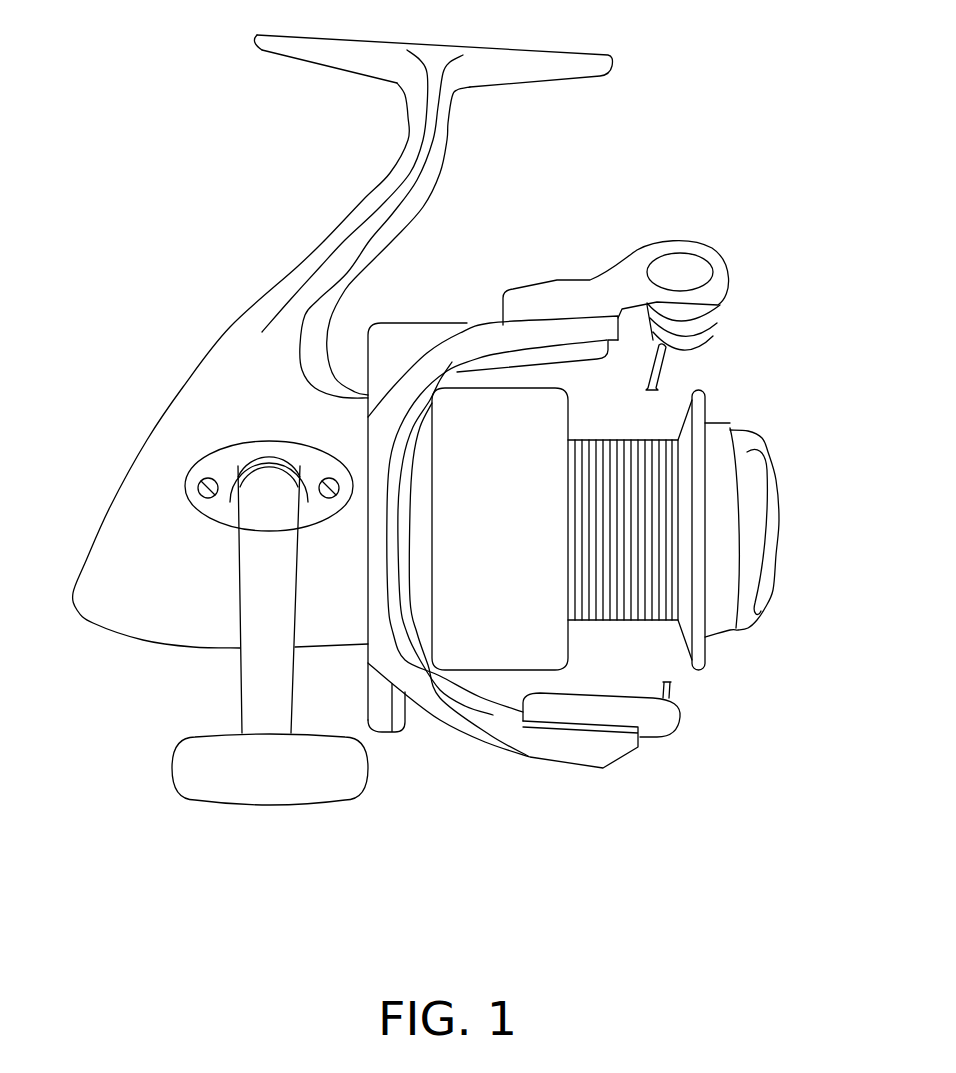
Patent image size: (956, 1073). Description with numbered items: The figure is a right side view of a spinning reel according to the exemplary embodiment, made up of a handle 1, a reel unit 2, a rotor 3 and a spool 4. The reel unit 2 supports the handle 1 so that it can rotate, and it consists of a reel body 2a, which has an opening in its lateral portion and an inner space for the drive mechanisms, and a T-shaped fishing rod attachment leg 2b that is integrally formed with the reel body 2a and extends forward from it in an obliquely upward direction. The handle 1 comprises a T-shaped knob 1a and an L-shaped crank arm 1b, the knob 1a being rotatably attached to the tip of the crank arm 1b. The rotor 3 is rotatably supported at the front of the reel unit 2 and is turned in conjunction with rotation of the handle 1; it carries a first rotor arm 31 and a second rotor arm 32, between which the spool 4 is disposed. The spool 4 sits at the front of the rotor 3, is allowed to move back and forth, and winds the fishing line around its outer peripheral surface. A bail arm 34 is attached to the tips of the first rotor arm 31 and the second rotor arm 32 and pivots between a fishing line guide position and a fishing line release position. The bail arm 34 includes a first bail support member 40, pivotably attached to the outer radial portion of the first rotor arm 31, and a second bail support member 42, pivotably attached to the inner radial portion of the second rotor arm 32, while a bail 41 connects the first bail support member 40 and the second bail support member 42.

The handle 1 is at (270, 664).
The T-shaped knob 1a is at (272, 785).
The L-shaped crank arm 1b is at (278, 680).
The reel unit 2 is at (343, 341).
The reel body 2a is at (160, 445).
The fishing rod attachment leg 2b is at (257, 297).
The rotor 3 is at (503, 512).
The first rotor arm 31 is at (540, 331).
The second rotor arm 32 is at (548, 745).
The bail arm 34 is at (735, 298).
The spool 4 is at (612, 437).
The first bail support member 40 is at (653, 287).
The bail 41 is at (663, 362).
The second bail support member 42 is at (658, 727).